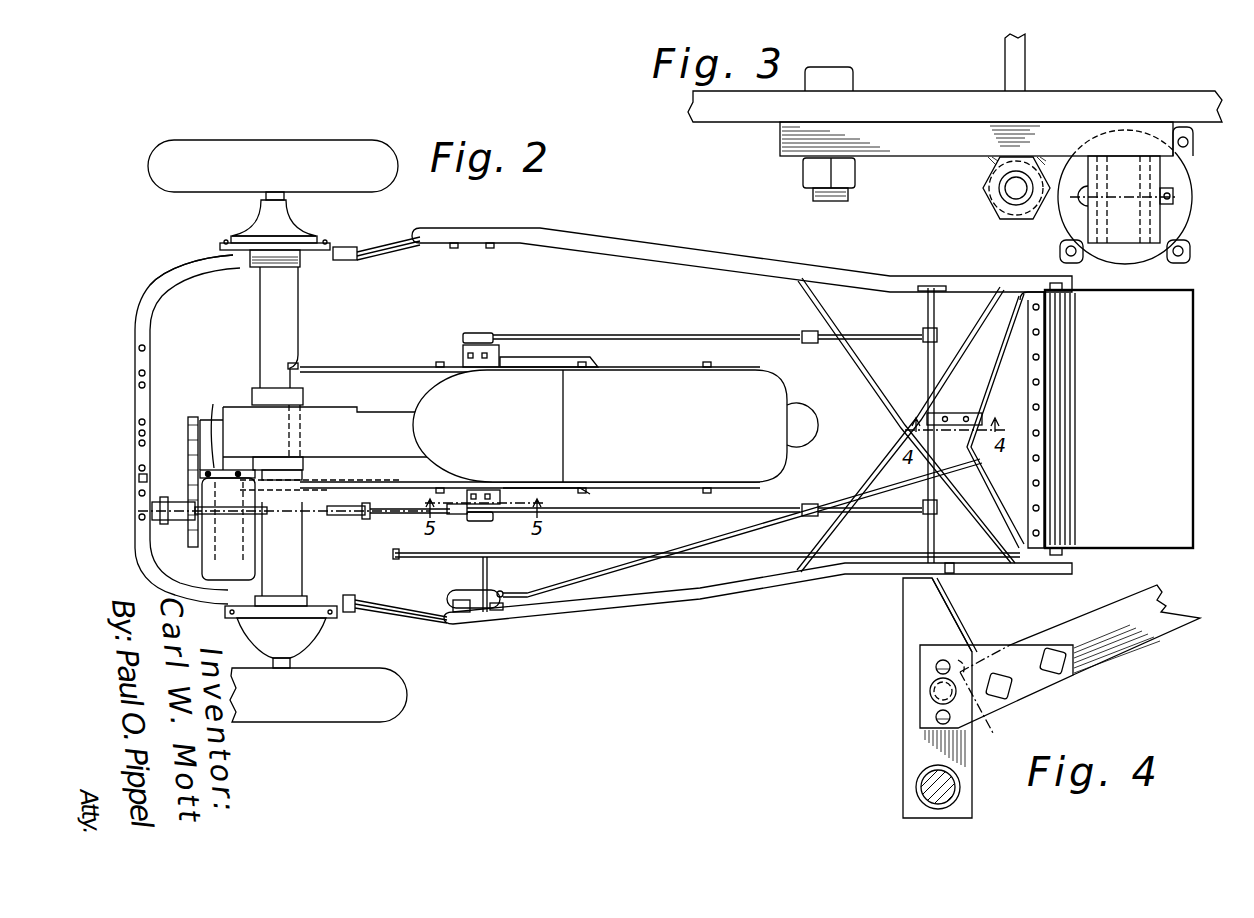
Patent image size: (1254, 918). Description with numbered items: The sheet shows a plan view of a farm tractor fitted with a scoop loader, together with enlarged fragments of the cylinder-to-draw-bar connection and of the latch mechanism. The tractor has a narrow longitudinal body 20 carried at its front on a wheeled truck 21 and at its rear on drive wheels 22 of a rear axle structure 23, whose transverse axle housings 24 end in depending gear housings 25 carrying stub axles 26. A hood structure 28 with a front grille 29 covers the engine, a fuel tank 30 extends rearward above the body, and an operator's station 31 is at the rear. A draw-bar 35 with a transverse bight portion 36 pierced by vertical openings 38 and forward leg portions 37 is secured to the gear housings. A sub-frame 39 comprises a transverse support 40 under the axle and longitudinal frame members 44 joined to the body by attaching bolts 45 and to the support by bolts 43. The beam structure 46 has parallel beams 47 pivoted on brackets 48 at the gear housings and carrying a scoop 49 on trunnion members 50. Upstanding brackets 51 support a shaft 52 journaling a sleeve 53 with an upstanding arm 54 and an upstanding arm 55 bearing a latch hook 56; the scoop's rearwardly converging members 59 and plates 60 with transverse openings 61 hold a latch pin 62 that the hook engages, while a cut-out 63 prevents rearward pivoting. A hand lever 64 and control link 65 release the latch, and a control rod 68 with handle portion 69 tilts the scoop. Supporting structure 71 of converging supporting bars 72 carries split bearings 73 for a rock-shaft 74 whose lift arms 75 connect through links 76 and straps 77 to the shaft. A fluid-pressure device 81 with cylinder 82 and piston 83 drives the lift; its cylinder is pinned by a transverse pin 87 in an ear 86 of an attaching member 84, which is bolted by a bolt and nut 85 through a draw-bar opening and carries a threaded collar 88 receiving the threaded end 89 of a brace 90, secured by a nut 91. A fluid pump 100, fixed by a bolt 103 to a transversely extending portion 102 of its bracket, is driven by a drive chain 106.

In FIG. 2, the body 20 is at (388, 412).
In FIG. 2, the wheeled truck 21 is at (808, 406).
In FIG. 2, the drive wheels 22 is at (360, 143).
In FIG. 2, the rear axle structure 23 is at (253, 319).
In FIG. 2, the axle housings 24 is at (298, 300).
In FIG. 2, the depending gear housing 25 is at (316, 236).
In FIG. 2, the stub axle 26 is at (285, 196).
In FIG. 2, the hood structure 28 is at (656, 380).
In FIG. 2, the front grille 29 is at (795, 462).
In FIG. 2, the fuel tank 30 is at (530, 406).
In FIG. 2, the operator's station 31 is at (392, 478).
In FIG. 2, the draw-bar 35 is at (131, 294).
In FIG. 3, the draw-bar 35 is at (1121, 88).
In FIG. 2, the transverse bight portion 36 is at (140, 393).
In FIG. 3, the transverse bight portion 36 is at (966, 100).
In FIG. 2, the leg portions 37 is at (186, 262).
In FIG. 2, the vertical openings 38 is at (138, 440).
In FIG. 2, the sub-frame 39 is at (416, 363).
In FIG. 2, the transverse support 40 is at (305, 387).
In FIG. 2, the bolt 43 is at (296, 364).
In FIG. 2, the frame members 44 is at (376, 366).
In FIG. 2, the attaching bolts 45 is at (752, 362).
In FIG. 2, the beam structure 46 is at (670, 238).
In FIG. 2, the beams 47 is at (757, 262).
In FIG. 2, the bracket 48 is at (360, 248).
In FIG. 2, the scoop 49 is at (1193, 461).
In FIG. 2, the trunnion members 50 is at (1064, 290).
In FIG. 2, the upstanding bracket 51 is at (944, 285).
In FIG. 2, the shaft 52 is at (928, 531).
In FIG. 4, the shaft 52 is at (917, 787).
In FIG. 2, the sleeve 53 is at (937, 452).
In FIG. 4, the sleeve 53 is at (960, 784).
In FIG. 2, the upstanding arm 54 is at (940, 500).
In FIG. 2, the upstanding arm 55 is at (925, 416).
In FIG. 4, the upstanding arm 55 is at (914, 621).
In FIG. 4, the latch hook 56 is at (961, 631).
In FIG. 2, the rearwardly converging members 59 is at (1001, 360).
In FIG. 4, the rearwardly converging members 59 is at (1147, 640).
In FIG. 2, the plates 60 is at (960, 412).
In FIG. 4, the plates 60 is at (1011, 645).
In FIG. 4, the transverse openings 61 is at (936, 717).
In FIG. 4, the latch pin 62 is at (1008, 700).
In FIG. 4, the cut-out 63 is at (984, 722).
In FIG. 2, the hand lever 64 is at (506, 603).
In FIG. 2, the control link 65 is at (640, 565).
In FIG. 2, the control rod 68 is at (578, 559).
In FIG. 2, the handle portion 69 is at (400, 560).
In FIG. 2, the supporting structure 71 is at (560, 494).
In FIG. 2, the supporting bars 72 is at (544, 357).
In FIG. 2, the split bearing 73 is at (498, 345).
In FIG. 2, the rock-shaft 74 is at (477, 333).
In FIG. 2, the lift arm 75 is at (660, 335).
In FIG. 2, the link 76 is at (870, 335).
In FIG. 2, the strap 77 is at (938, 333).
In FIG. 2, the fluid-pressure device 81 is at (370, 528).
In FIG. 3, the fluid-pressure device 81 is at (1197, 164).
In FIG. 2, the cylinder 82 is at (337, 517).
In FIG. 3, the cylinder 82 is at (1175, 191).
In FIG. 2, the piston 83 is at (386, 515).
In FIG. 2, the attaching member 84 is at (145, 523).
In FIG. 3, the attaching member 84 is at (893, 156).
In FIG. 2, the bolt and nut 85 is at (138, 479).
In FIG. 3, the bolt and nut 85 is at (853, 74).
In FIG. 3, the ear 86 is at (1160, 229).
In FIG. 3, the transverse pin 87 is at (1081, 202).
In FIG. 3, the threaded collar 88 is at (986, 176).
In FIG. 3, the threaded end 89 is at (1010, 199).
In FIG. 2, the brace 90 is at (180, 504).
In FIG. 3, the brace 90 is at (1025, 52).
In FIG. 2, the nut 91 is at (295, 498).
In FIG. 3, the nut 91 is at (1008, 189).
In FIG. 2, the fluid pump 100 is at (208, 562).
In FIG. 2, the transversely extending portion 102 is at (213, 406).
In FIG. 2, the bolt 103 is at (226, 494).
In FIG. 2, the drive chain 106 is at (192, 422).